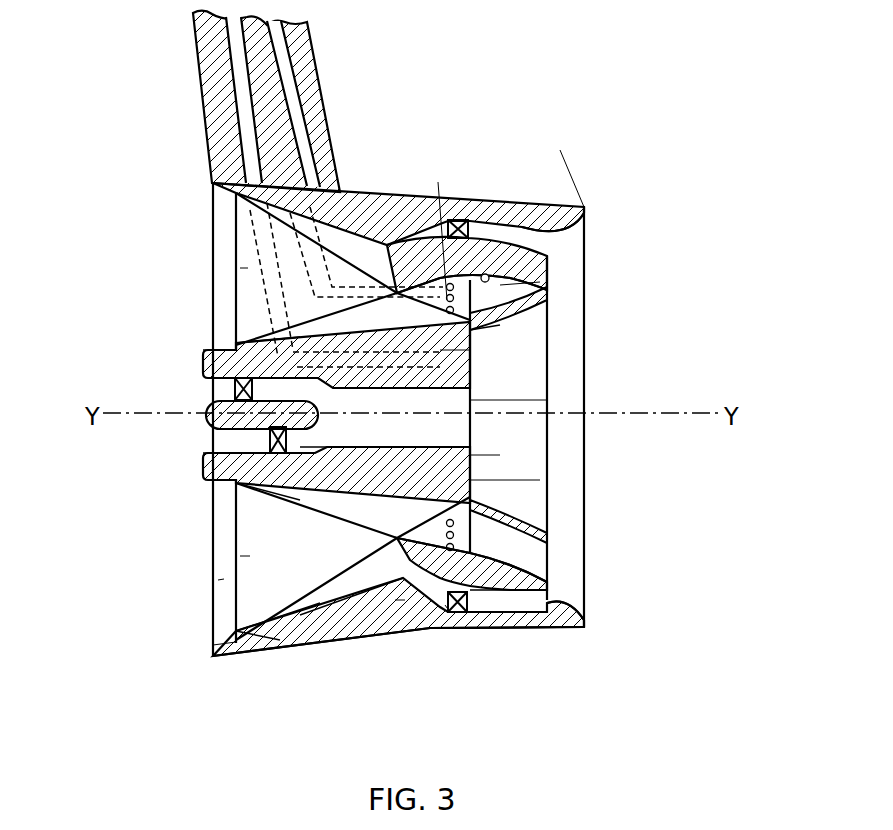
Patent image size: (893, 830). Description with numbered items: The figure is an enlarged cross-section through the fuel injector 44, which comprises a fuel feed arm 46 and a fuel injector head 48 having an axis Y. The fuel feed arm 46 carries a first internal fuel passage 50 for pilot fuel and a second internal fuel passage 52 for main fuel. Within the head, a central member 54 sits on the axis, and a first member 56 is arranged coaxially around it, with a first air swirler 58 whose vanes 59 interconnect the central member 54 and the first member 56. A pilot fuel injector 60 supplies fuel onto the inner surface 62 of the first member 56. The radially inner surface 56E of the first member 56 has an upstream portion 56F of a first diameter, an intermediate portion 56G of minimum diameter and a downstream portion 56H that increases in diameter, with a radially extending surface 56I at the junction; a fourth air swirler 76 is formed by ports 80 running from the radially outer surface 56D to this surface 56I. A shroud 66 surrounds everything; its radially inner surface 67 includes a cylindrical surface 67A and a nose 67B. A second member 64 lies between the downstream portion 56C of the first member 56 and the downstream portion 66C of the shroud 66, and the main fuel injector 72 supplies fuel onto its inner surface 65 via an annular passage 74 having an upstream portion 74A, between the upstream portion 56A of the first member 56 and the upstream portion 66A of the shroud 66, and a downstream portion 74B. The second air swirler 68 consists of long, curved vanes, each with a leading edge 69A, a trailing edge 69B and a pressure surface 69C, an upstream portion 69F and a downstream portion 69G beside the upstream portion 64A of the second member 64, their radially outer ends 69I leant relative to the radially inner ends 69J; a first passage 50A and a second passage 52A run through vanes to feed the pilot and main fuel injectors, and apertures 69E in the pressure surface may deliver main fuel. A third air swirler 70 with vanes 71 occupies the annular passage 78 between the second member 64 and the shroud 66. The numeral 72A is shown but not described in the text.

The fuel injector 44 is at (561, 150).
The fuel feed arm 46 is at (261, 101).
The fuel injector head 48 is at (363, 613).
The first internal fuel passage 50 is at (237, 79).
The first passage 50A is at (255, 231).
The second internal fuel passage 52 is at (288, 67).
The second passage 52A is at (405, 292).
The central member 54 is at (208, 419).
The first member 56 is at (546, 296).
The upstream portion of the first member 56A is at (252, 338).
The downstream portion of the first member 56C is at (492, 313).
The radially outer surface of the first member 56D is at (348, 463).
The radially inner surface of the first member 56E is at (293, 478).
The upstream portion of the radially inner surface 56F is at (218, 448).
The intermediate portion of the radially inner surface 56G is at (407, 443).
The downstream portion of the radially inner surface 56H is at (482, 326).
The radially extending surface 56I is at (470, 456).
The first air swirler 58 is at (234, 390).
The vanes 59 is at (287, 444).
The pilot fuel injector 60 is at (470, 471).
The inner surface of the first member 62 is at (470, 432).
The second member 64 is at (548, 586).
The upstream portion of the second member 64A is at (461, 623).
The inner surface of the second member 65 is at (523, 565).
The shroud 66 is at (427, 620).
The upstream portion of the shroud 66A is at (272, 640).
The downstream portion of the shroud 66C is at (507, 628).
The radially inner surface of the shroud 67 is at (228, 630).
The cylindrical surface 67A is at (500, 206).
The nose 67B is at (562, 232).
The second air swirler 68 is at (258, 268).
The leading edge 69A is at (233, 578).
The trailing edge 69B is at (471, 538).
The pressure surface 69C is at (260, 555).
The apertures 69E is at (452, 612).
The first upstream portion of the vane 69F is at (228, 582).
The second downstream portion of the vane 69G is at (400, 600).
The radially outer ends of the vanes 69I is at (230, 640).
The radially inner ends of the vanes 69J is at (236, 341).
The third air swirler 70 is at (462, 221).
The vanes 71 is at (462, 614).
The main fuel injector 72 is at (520, 259).
The lower vane surface 72A is at (500, 630).
The annular passage 74 is at (217, 287).
The upstream portion of the annular passage 74A is at (337, 593).
The downstream portion of the annular passage 74B is at (505, 294).
The fourth air swirler 76 is at (463, 358).
The annular passage 78 is at (532, 222).
The ports 80 is at (438, 355).